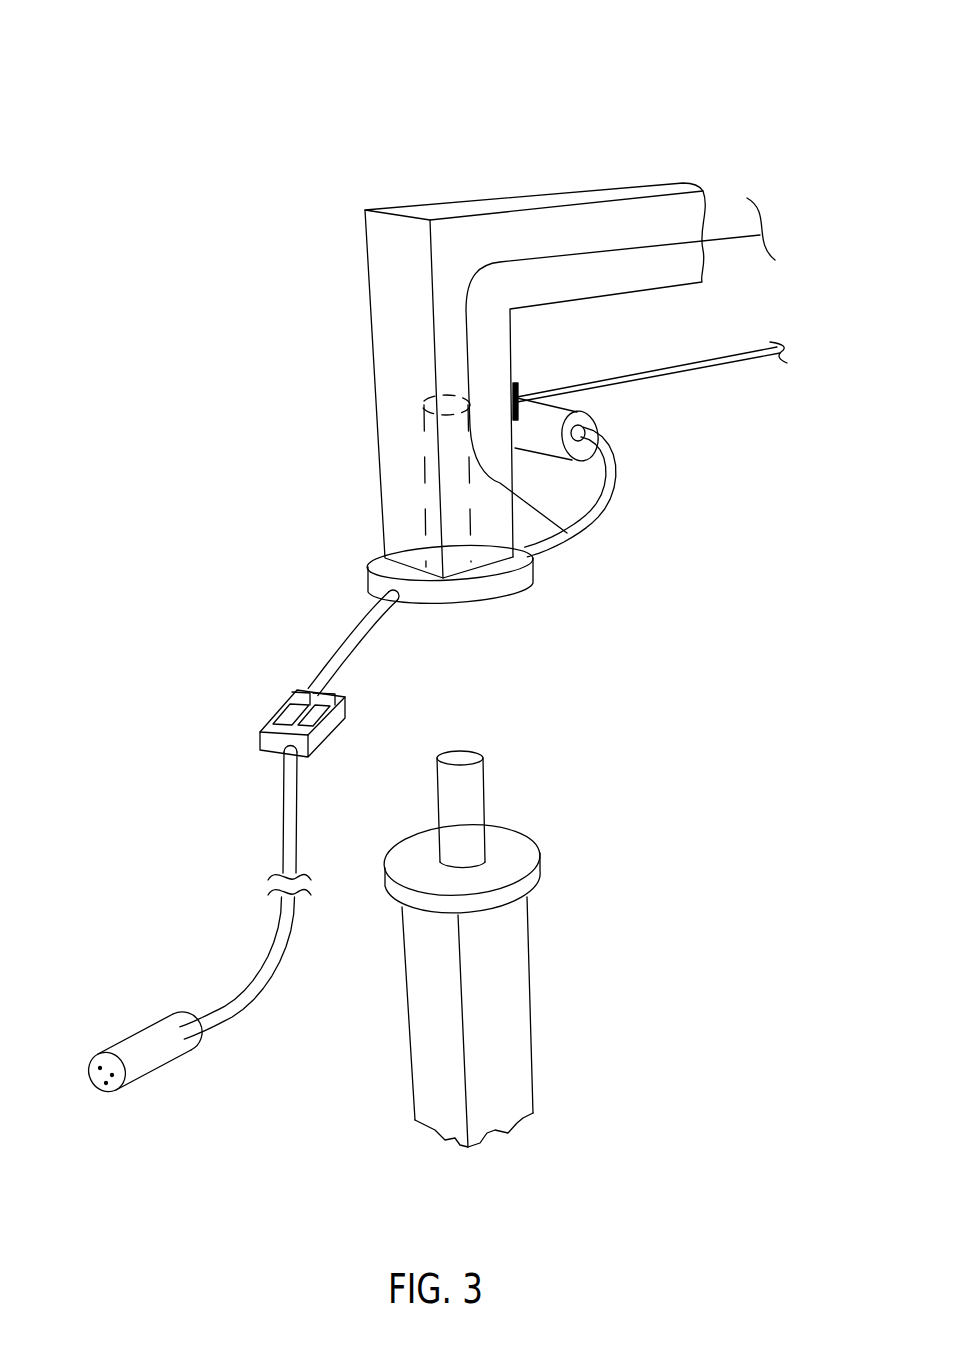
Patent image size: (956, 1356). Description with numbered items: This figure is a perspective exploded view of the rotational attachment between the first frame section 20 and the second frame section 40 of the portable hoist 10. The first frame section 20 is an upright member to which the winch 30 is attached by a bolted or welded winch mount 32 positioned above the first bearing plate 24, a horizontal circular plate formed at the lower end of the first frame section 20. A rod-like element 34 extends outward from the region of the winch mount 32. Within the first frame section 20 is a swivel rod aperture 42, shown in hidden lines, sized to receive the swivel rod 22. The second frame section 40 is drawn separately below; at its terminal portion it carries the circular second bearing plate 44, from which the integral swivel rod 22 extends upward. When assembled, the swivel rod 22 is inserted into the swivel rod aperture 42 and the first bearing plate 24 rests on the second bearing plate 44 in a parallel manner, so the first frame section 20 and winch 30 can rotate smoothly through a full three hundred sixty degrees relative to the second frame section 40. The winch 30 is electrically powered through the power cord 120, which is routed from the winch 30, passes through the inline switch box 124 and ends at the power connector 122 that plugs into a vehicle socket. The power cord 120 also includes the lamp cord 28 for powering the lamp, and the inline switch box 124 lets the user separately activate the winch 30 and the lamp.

The portable hoist 10 is at (178, 191).
The first frame section 20 is at (562, 200).
The swivel rod 22 is at (463, 783).
The first bearing plate 24 is at (385, 570).
The lamp cord 28 is at (638, 245).
The winch 30 is at (580, 423).
The winch mount 32 is at (518, 397).
The sensor probe 34 is at (692, 373).
The second frame section 40 is at (492, 982).
The swivel rod aperture 42 is at (423, 400).
The second bearing plate 44 is at (517, 887).
The power cord 120 is at (613, 493).
The power connector 122 is at (148, 1057).
The inline switch box 124 is at (267, 725).